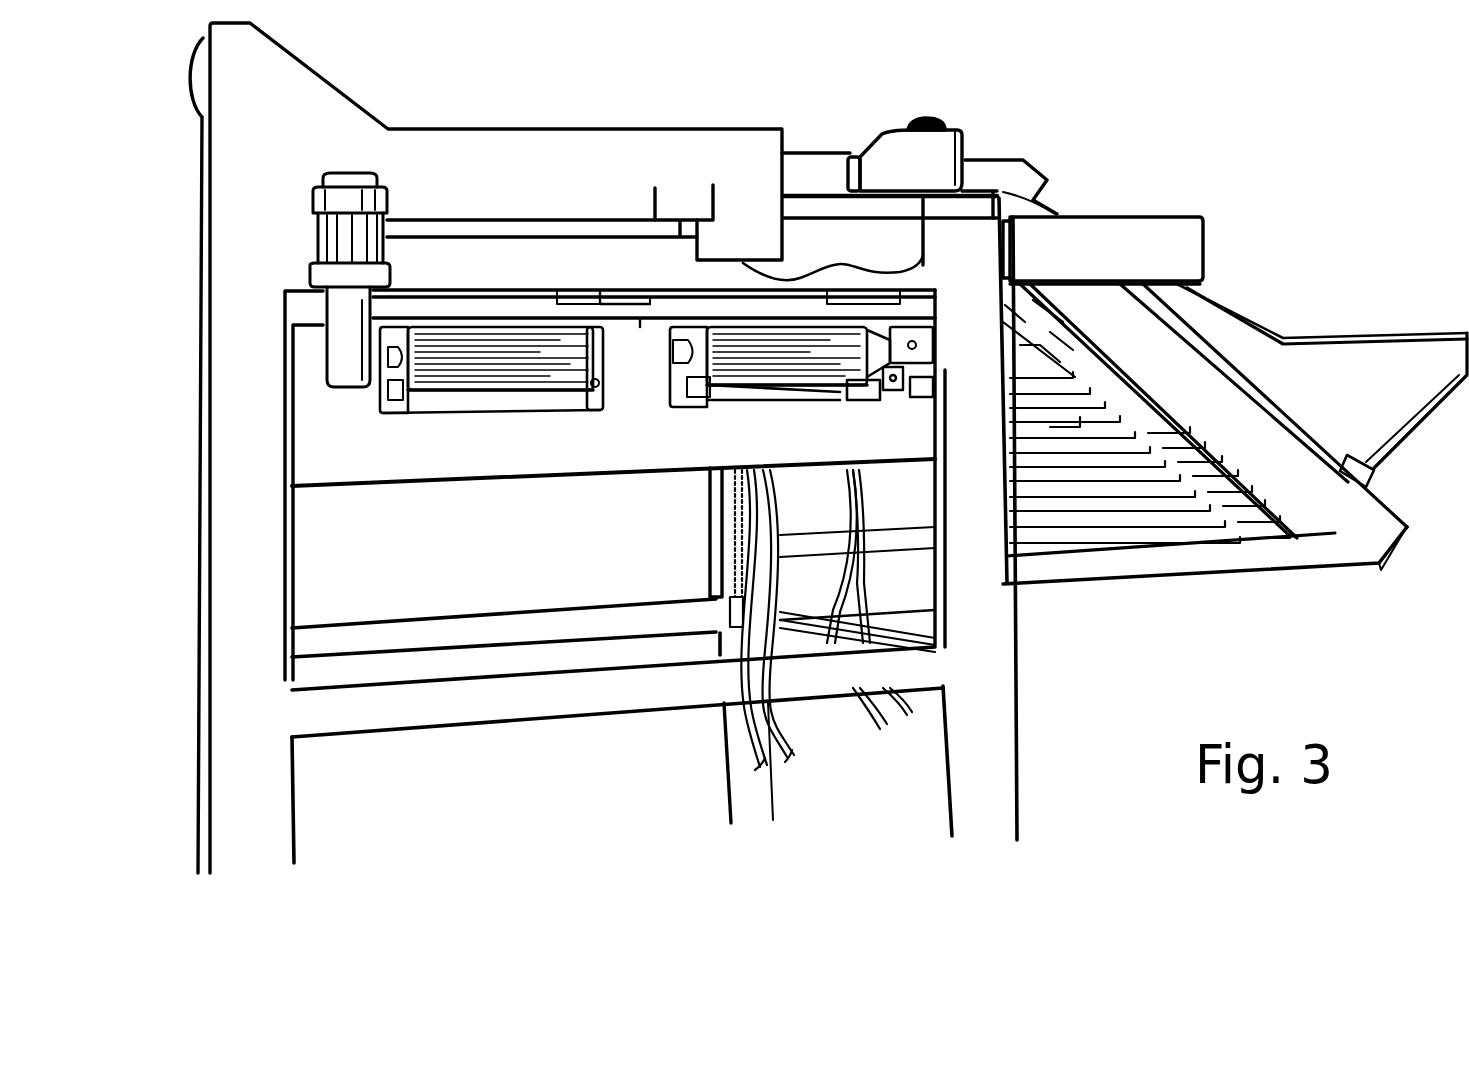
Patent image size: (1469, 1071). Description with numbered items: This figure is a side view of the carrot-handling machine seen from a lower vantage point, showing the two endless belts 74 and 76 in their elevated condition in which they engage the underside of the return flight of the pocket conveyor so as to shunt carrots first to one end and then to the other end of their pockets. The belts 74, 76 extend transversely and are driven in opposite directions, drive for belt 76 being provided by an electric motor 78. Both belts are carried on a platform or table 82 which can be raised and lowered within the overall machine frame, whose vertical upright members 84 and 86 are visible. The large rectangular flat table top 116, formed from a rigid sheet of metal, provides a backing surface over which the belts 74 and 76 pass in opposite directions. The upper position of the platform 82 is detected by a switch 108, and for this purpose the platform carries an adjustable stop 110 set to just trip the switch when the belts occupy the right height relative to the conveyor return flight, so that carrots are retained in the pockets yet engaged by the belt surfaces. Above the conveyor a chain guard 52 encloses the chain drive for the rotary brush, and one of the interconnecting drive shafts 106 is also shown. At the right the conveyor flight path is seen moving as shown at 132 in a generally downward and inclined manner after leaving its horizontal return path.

The chain guard 52 is at (1200, 216).
The endless belt 74 is at (753, 350).
The endless belt 76 is at (500, 357).
The electric motor 78 is at (313, 228).
The platform 82 is at (360, 468).
The vertical upright member 84 is at (262, 653).
The vertical upright member 86 is at (994, 567).
The interconnecting drive shaft 106 is at (933, 622).
The switch 108 is at (935, 363).
The adjustable stop 110 is at (912, 403).
The table top 116 is at (623, 330).
The downward inclined section of the conveyor flight path 132 is at (1130, 485).